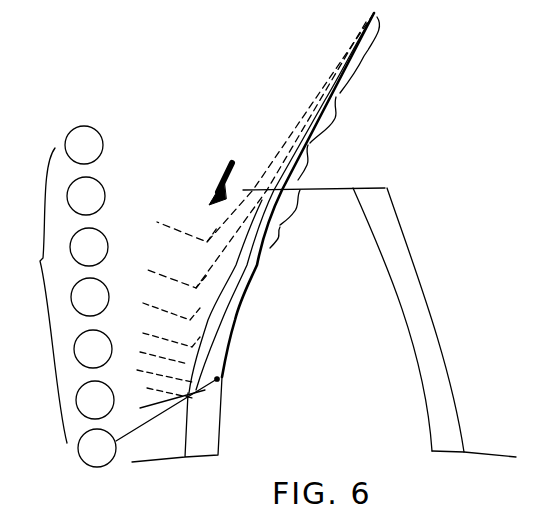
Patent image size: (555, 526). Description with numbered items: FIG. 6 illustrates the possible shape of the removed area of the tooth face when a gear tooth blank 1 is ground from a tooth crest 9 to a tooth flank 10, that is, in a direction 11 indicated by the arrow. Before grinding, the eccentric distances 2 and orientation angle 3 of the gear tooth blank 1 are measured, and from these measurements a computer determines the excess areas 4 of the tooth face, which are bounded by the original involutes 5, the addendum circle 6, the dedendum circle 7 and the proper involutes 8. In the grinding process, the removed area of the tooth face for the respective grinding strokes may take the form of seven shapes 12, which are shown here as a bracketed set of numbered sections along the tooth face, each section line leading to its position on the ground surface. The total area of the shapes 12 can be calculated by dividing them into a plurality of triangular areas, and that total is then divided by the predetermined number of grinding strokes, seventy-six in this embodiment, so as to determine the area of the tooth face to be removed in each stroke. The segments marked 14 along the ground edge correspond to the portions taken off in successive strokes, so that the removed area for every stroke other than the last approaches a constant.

The gear tooth blank 1 is at (248, 197).
The eccentric distances 2 is at (247, 222).
The orientation angle 3 is at (238, 252).
The excess areas 4 is at (227, 293).
The original involutes 5 is at (220, 323).
The addendum circle 6 is at (210, 366).
The dedendum circle 7 is at (203, 396).
The proper involutes 8 is at (233, 345).
The tooth crest 9 is at (345, 188).
The tooth flank 10 is at (185, 458).
The direction 11 is at (224, 166).
The shapes 12 is at (42, 295).
The blade segments 14 is at (331, 135).